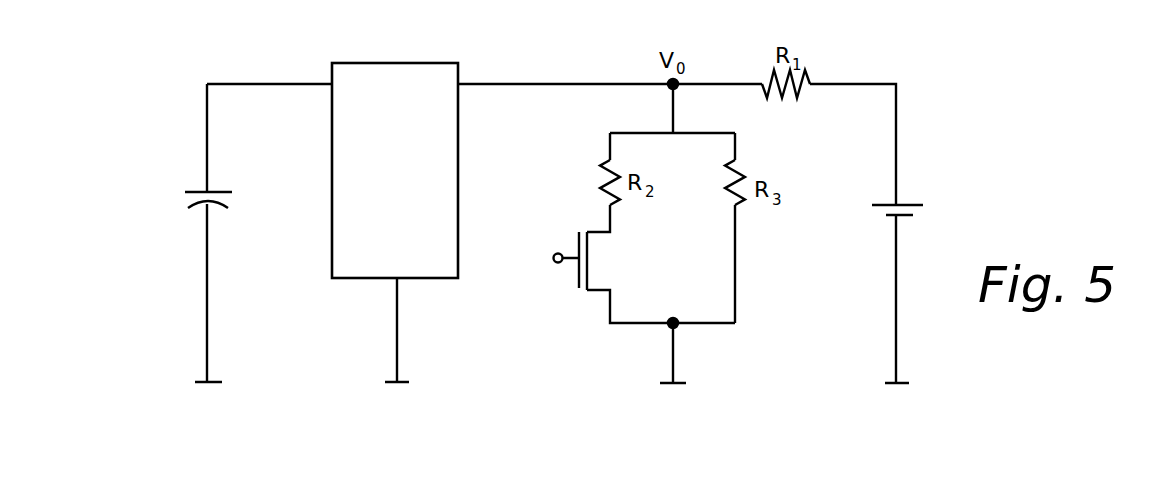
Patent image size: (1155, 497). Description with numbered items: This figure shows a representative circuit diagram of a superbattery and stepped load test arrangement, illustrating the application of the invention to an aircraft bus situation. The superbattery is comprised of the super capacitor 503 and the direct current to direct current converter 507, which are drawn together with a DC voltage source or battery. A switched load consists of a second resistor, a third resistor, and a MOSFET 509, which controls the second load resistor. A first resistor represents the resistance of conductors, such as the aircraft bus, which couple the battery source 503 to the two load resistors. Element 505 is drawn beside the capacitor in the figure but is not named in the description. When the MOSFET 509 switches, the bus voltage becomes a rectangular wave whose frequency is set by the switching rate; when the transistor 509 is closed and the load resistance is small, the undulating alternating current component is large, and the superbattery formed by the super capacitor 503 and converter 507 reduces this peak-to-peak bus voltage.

The super capacitor 503 is at (891, 218).
The capacitor C 505 is at (204, 205).
The direct current to direct current converter 507 is at (367, 279).
The MOSFET 509 is at (578, 272).